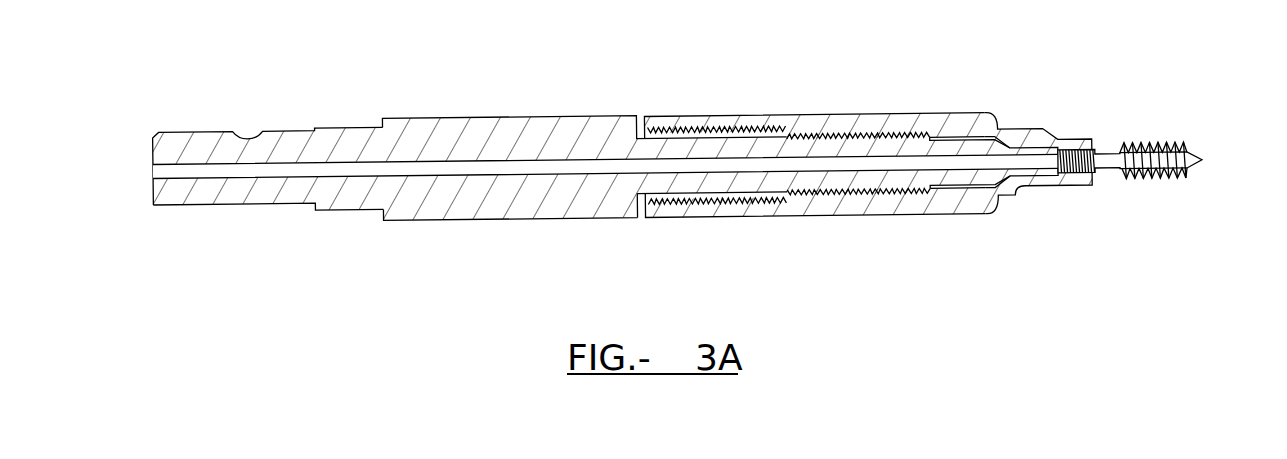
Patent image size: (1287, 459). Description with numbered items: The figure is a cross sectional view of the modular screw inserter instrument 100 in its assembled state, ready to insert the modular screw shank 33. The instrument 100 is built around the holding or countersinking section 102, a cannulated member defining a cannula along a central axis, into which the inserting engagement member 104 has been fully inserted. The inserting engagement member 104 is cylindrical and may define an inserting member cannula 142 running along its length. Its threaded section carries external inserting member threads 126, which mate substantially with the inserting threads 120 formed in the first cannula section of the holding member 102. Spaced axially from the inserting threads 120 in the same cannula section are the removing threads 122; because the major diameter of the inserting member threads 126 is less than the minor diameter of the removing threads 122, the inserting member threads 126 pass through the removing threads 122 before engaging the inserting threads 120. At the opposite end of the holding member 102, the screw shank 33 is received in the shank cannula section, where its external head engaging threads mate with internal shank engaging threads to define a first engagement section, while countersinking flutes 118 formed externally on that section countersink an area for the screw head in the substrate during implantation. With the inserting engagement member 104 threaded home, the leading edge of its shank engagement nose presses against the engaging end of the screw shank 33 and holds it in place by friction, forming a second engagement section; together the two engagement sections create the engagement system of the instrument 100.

The modular screw inserter instrument 100 is at (245, 265).
The inserting member cannula 142 is at (162, 172).
The inserting engagement member 104 is at (397, 223).
The holding or countersinking section 102 is at (934, 122).
The countersinking flutes 118 is at (1044, 130).
The removing threads 122 is at (689, 126).
The inserting threads 120 is at (846, 130).
The inserting member threads 126 is at (868, 196).
The screw shank 33 is at (1106, 151).